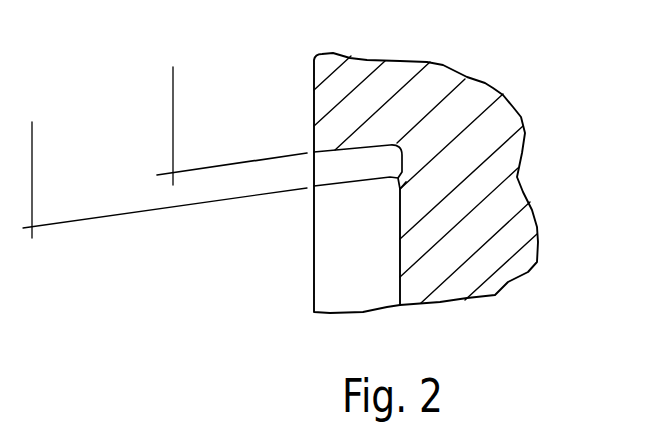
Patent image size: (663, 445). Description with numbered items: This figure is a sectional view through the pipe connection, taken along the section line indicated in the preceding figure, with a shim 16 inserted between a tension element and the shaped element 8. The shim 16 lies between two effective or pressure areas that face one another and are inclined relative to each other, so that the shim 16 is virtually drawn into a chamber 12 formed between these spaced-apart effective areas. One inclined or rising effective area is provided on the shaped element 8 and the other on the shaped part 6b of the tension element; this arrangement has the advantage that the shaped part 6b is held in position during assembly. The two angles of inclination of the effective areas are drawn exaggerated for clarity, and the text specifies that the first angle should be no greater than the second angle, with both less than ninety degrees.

The shaped element 8 is at (483, 94).
The chamber 12 is at (403, 185).
The shim 16 is at (357, 168).
The shaped part 6b is at (353, 272).